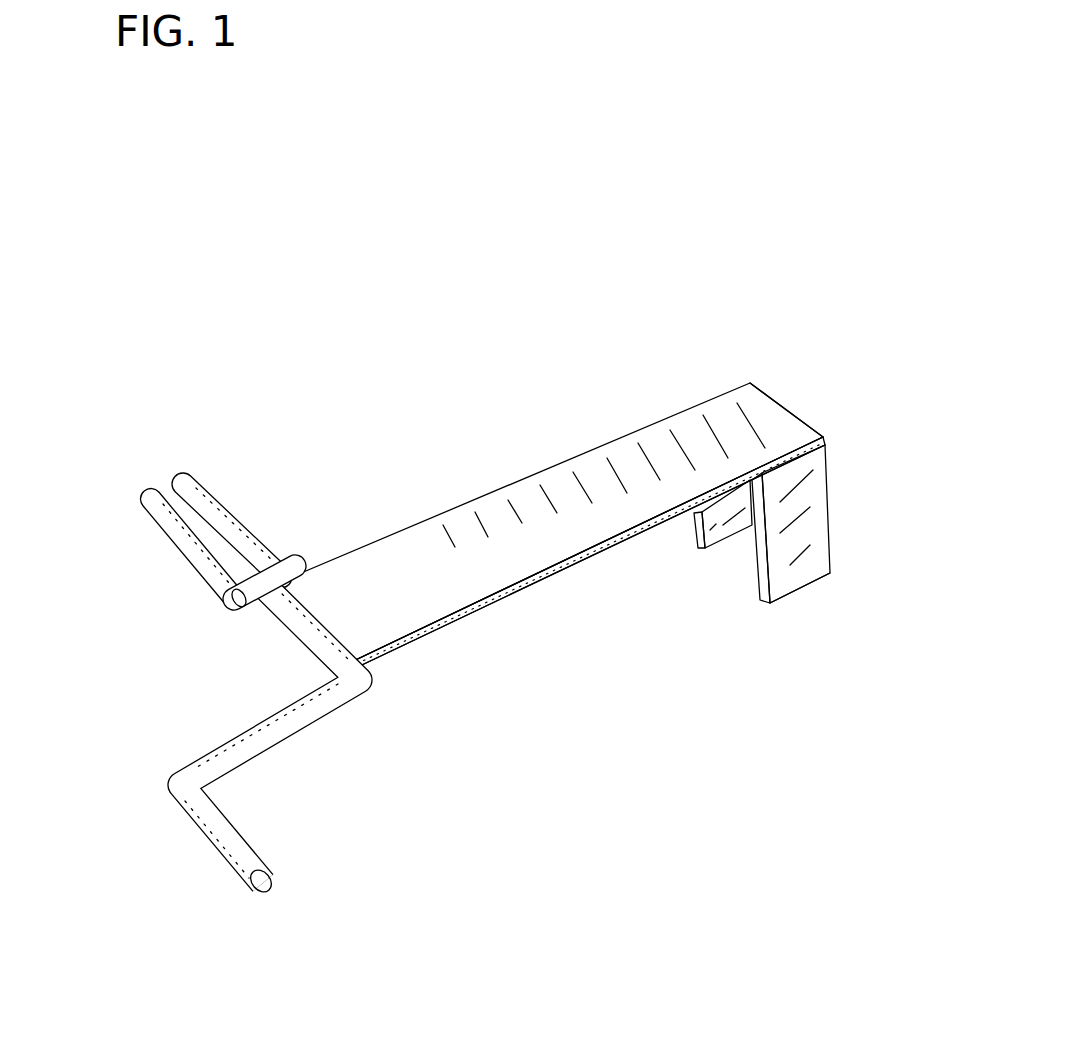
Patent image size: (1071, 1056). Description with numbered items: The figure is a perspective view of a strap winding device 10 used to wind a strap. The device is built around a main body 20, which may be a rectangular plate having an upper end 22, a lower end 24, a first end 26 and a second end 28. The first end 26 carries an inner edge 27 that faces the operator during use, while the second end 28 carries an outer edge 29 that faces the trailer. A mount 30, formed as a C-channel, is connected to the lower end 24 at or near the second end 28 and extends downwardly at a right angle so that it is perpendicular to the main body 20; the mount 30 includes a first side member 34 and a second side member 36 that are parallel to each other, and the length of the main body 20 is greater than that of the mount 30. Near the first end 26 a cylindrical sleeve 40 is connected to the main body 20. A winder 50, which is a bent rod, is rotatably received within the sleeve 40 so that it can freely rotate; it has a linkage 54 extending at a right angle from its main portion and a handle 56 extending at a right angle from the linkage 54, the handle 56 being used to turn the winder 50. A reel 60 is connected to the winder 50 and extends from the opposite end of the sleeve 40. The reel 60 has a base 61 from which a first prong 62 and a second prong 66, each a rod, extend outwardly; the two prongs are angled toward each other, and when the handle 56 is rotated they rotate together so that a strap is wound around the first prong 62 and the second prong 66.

The strap winding device 10 is at (475, 192).
The main body 20 is at (528, 503).
The upper end 22 is at (588, 511).
The lower end 24 is at (492, 607).
The first end 26 is at (303, 571).
The inner edge 27 is at (340, 635).
The second end 28 is at (750, 381).
The outer edge 29 is at (788, 410).
The mount 30 is at (850, 585).
The first side member 34 is at (712, 530).
The second side member 36 is at (803, 570).
The sleeve 40 is at (216, 748).
The winder 50 is at (286, 751).
The linkage 54 is at (230, 745).
The handle 56 is at (213, 832).
The reel 60 is at (135, 521).
The base 61 is at (228, 567).
The first prong 62 is at (146, 493).
The second prong 66 is at (186, 479).